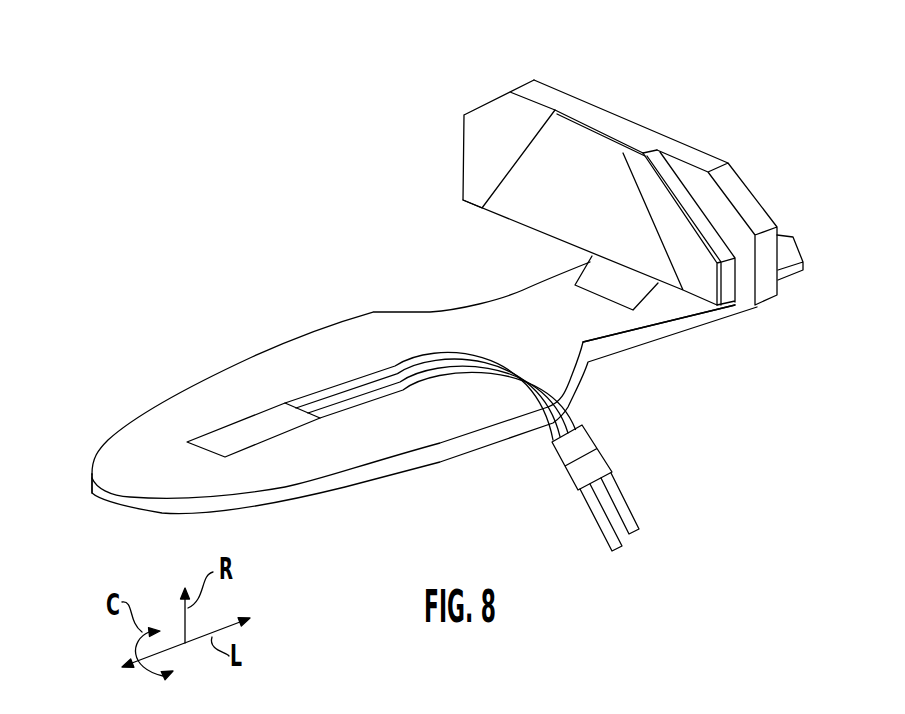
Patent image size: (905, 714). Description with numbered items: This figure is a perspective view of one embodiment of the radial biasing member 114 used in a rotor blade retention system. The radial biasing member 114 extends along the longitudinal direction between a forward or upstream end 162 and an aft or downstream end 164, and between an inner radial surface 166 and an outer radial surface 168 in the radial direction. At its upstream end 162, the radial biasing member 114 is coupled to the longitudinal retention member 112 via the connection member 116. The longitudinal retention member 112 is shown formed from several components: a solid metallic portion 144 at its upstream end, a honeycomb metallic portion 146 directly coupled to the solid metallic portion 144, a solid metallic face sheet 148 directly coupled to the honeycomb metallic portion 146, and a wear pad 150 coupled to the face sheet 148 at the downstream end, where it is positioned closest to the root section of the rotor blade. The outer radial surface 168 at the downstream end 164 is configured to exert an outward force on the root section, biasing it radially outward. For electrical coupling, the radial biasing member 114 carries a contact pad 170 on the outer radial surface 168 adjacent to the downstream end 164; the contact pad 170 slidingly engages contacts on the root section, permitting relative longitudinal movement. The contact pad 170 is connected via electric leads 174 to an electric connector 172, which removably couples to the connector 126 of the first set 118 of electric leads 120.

The longitudinal retention member 112 is at (697, 82).
The radial biasing member 114 is at (375, 305).
The connection member 116 is at (783, 250).
The first set of electric leads 118 is at (665, 520).
The electric leads 120 is at (623, 506).
The connector 126 is at (607, 458).
The solid metallic portion 144 is at (707, 162).
The honeycomb metallic portion 146 is at (585, 127).
The solid metallic face sheet 148 is at (488, 150).
The wear pad 150 is at (528, 210).
The upstream end 162 is at (724, 347).
The downstream end 164 is at (90, 513).
The inner radial surface 166 is at (332, 497).
The outer radial surface 168 is at (125, 425).
The contact pad 170 is at (240, 435).
The electric connector 172 is at (597, 424).
The electric leads 174 is at (400, 372).